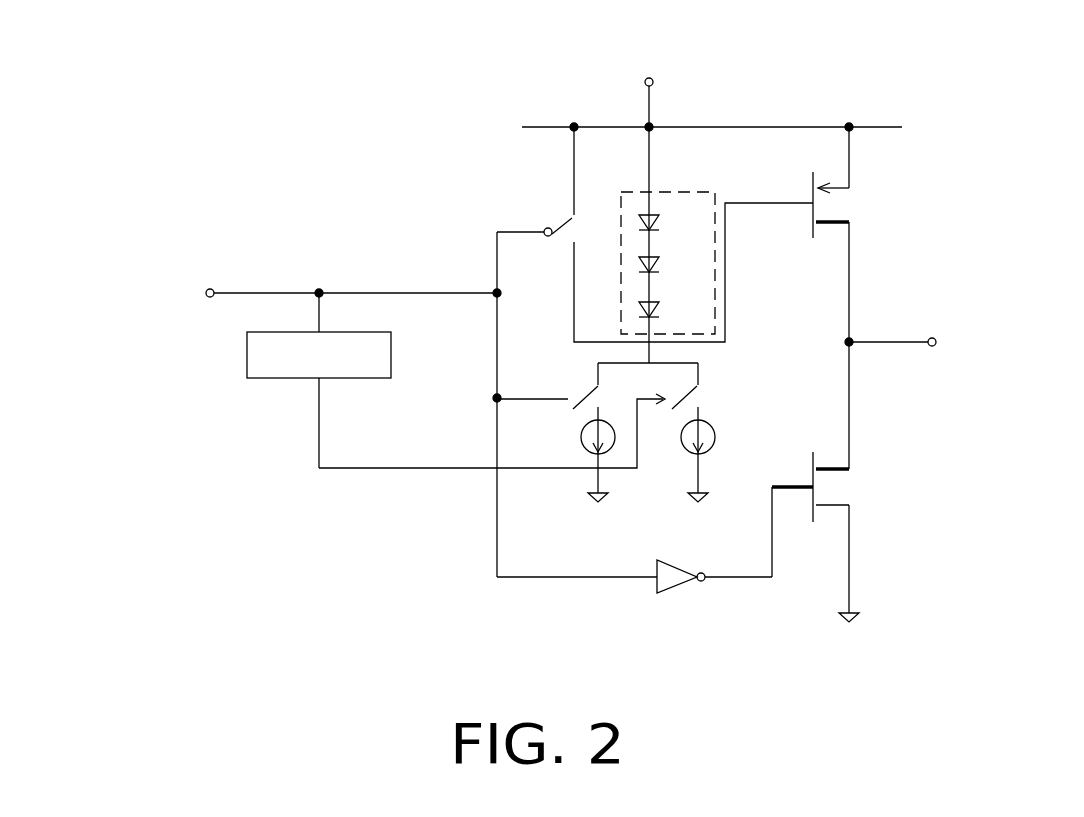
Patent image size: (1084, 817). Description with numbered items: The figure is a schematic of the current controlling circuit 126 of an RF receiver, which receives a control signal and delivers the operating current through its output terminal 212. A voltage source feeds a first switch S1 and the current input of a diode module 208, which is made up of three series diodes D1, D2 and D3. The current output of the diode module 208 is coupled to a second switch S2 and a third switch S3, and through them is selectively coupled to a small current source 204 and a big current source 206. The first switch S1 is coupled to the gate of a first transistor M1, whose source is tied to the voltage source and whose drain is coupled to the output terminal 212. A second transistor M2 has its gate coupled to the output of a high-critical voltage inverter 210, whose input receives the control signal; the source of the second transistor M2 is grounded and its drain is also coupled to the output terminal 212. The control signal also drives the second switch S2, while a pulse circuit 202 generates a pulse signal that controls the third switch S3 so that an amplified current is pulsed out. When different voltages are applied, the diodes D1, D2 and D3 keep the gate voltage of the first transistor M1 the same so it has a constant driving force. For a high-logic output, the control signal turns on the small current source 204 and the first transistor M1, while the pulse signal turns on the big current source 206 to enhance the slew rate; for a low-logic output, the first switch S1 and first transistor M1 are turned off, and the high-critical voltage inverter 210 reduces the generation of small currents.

The current controlling circuit 126 is at (492, 329).
The pulse circuit 202 is at (391, 353).
The small current source 204 is at (580, 437).
The big current source 206 is at (713, 440).
The diode module 208 is at (681, 192).
The high-critical voltage inverter 210 is at (675, 584).
The output terminal 212 is at (887, 345).
The first switch S1 is at (563, 228).
The second switch S2 is at (578, 392).
The third switch S3 is at (702, 395).
The diode D1 is at (672, 216).
The diode D2 is at (672, 265).
The diode D3 is at (672, 310).
The first transistor M1 is at (832, 218).
The second transistor M2 is at (832, 498).